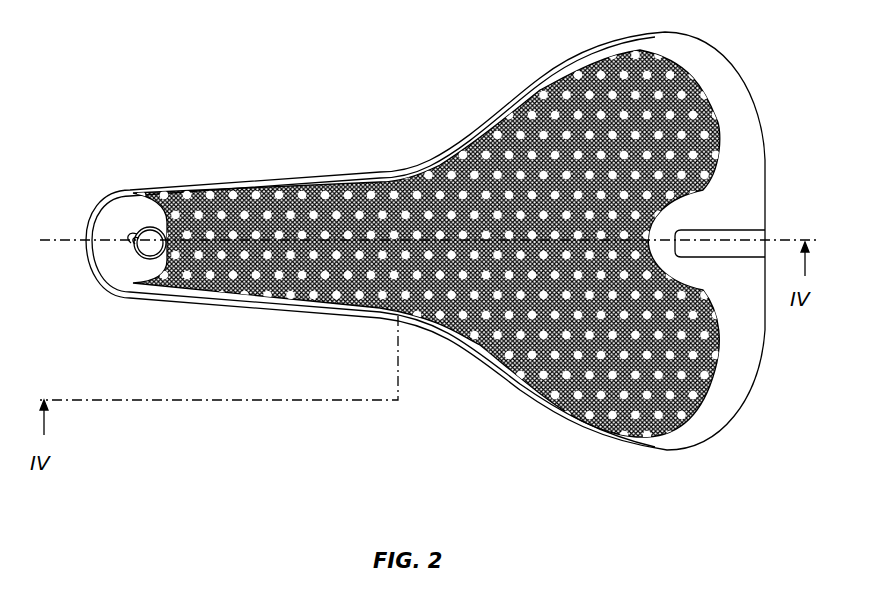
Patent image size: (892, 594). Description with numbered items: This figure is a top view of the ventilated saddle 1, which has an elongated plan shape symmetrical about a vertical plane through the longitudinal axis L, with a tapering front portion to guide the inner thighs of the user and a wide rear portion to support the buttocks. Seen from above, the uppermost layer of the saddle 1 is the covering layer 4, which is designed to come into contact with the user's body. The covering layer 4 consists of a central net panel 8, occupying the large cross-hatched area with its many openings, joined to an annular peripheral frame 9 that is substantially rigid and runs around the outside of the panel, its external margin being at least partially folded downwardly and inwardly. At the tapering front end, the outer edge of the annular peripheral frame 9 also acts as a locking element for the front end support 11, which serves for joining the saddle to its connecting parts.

The saddle 1 is at (350, 113).
The covering layer 4 is at (497, 117).
The central net panel 8 is at (426, 243).
The annular peripheral frame 9 is at (745, 113).
The front end support 11 is at (108, 213).
The longitudinal axis L is at (794, 240).